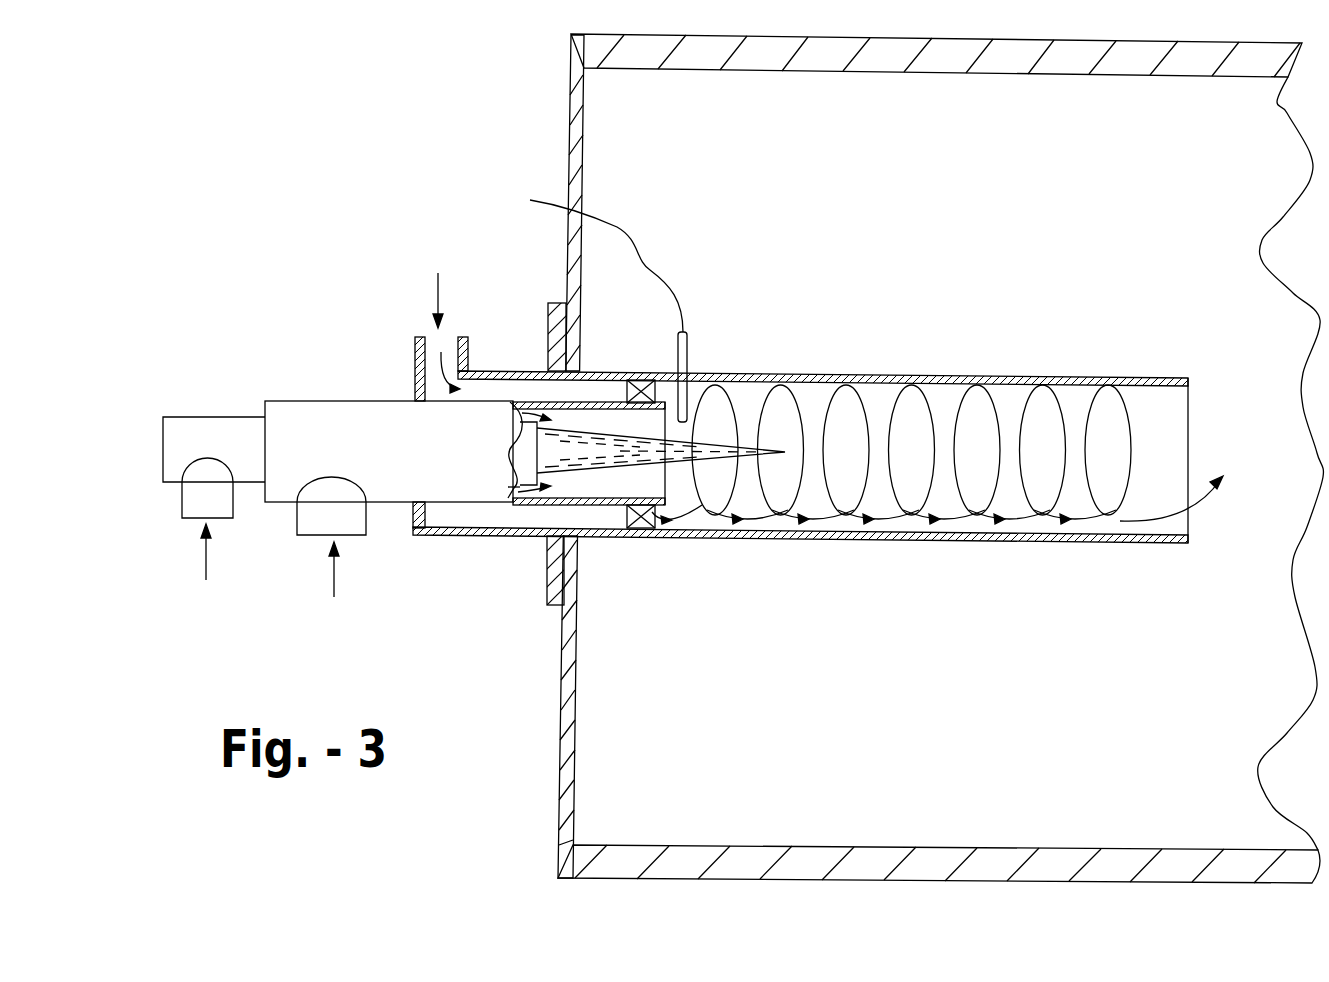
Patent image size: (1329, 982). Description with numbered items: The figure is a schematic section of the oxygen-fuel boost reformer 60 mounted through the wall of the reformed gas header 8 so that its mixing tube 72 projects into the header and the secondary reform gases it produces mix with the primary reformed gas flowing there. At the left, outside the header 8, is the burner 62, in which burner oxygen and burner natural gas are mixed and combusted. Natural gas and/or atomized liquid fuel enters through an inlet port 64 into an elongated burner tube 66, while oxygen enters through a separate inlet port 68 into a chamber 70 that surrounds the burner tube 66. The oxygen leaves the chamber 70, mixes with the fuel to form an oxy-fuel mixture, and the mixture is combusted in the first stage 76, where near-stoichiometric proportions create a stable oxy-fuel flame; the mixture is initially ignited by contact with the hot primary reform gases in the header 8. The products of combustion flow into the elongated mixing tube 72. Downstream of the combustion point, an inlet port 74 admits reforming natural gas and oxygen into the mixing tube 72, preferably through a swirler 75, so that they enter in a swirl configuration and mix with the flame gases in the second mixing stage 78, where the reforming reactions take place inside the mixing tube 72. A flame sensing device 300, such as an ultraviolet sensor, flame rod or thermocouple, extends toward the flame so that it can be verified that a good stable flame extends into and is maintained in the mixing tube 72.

The header 8 is at (566, 128).
The oxygen-fuel boost reformer 60 is at (408, 396).
The burner 62 is at (363, 418).
The inlet port 64 is at (209, 500).
The elongated burner tube 66 is at (245, 430).
The inlet port 68 is at (335, 517).
The chamber 70 is at (515, 497).
The mixing tube 72 is at (760, 373).
The inlet port 74 is at (437, 350).
The swirler 75 is at (645, 380).
The first stage 76 is at (556, 448).
The second mixing stage 78 is at (700, 455).
The flame sensing device 300 is at (690, 345).